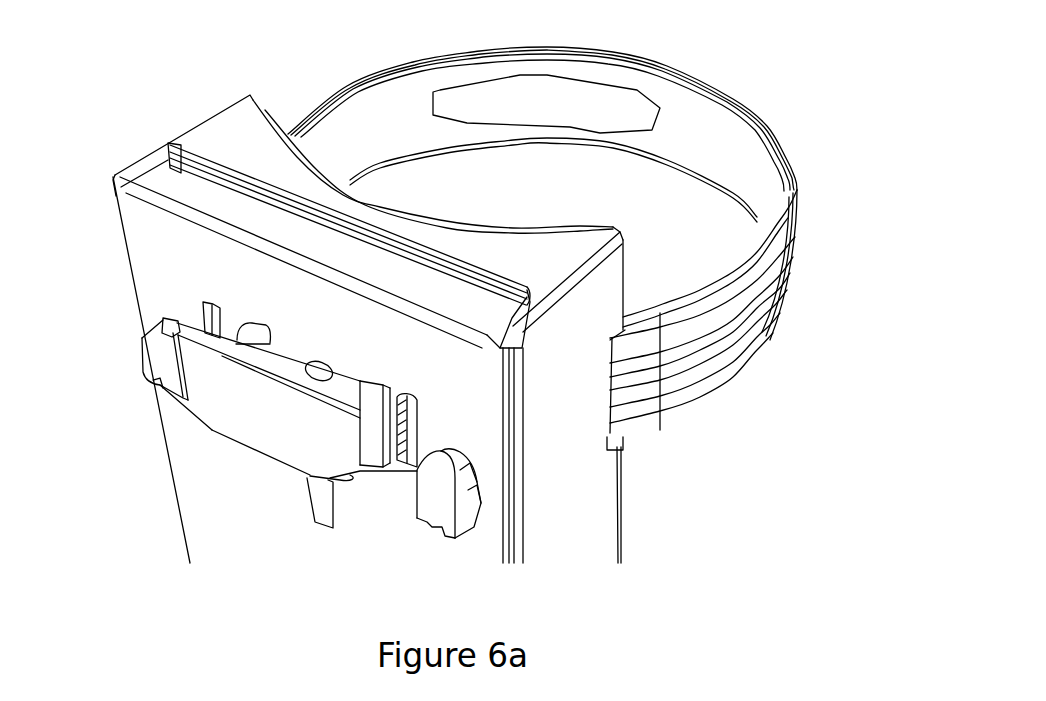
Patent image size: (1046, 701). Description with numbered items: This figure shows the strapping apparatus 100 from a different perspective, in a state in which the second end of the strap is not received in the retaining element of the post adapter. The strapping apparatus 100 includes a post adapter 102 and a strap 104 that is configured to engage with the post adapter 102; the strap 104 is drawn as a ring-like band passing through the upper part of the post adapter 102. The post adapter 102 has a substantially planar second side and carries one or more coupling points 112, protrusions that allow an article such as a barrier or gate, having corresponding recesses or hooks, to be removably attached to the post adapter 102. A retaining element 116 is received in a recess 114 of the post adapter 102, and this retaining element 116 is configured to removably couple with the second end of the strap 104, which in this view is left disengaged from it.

The strapping apparatus 100 is at (124, 119).
The post adapter 102 is at (130, 272).
The strap 104 is at (700, 85).
The coupling points 112 is at (477, 515).
The recess 114 is at (403, 428).
The retaining element 116 is at (213, 428).